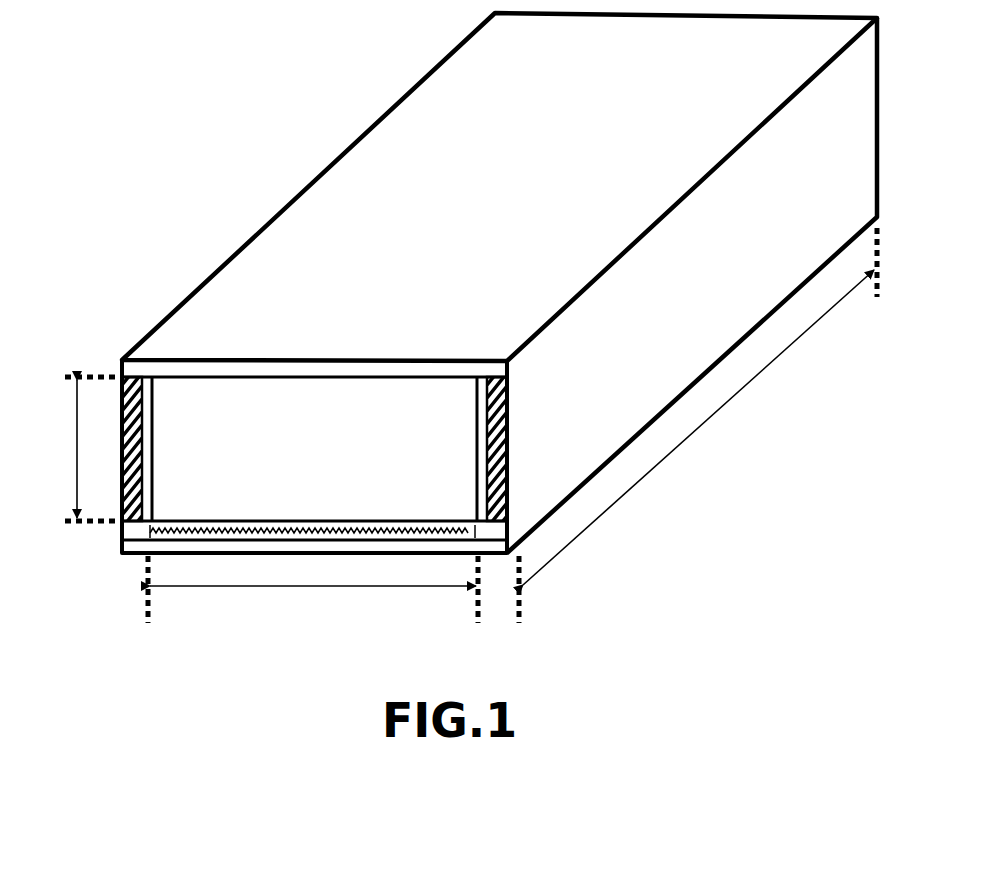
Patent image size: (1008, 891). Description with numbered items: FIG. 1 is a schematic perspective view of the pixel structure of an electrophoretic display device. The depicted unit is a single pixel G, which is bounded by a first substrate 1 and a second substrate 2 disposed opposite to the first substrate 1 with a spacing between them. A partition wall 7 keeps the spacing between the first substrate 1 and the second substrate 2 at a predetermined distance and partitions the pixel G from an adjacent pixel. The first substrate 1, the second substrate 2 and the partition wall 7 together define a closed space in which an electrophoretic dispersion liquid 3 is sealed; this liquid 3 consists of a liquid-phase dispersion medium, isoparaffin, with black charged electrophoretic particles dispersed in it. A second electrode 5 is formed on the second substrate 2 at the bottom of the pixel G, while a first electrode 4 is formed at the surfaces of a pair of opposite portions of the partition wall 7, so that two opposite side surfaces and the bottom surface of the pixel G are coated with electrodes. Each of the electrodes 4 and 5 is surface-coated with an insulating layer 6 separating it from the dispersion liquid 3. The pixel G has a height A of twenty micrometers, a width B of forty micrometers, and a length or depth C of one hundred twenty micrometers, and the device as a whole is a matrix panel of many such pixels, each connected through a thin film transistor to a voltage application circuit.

The top wall 1 is at (385, 372).
The bottom wall 2 is at (122, 543).
The interior cavity 3 is at (305, 402).
The side walls 4 is at (141, 423).
The bottom layer strip 5 is at (273, 530).
The inner layer 6 is at (153, 485).
The gap 7 is at (160, 443).
The housing G is at (267, 190).
The height dimension A is at (84, 449).
The width dimension B is at (313, 591).
The length dimension C is at (698, 425).